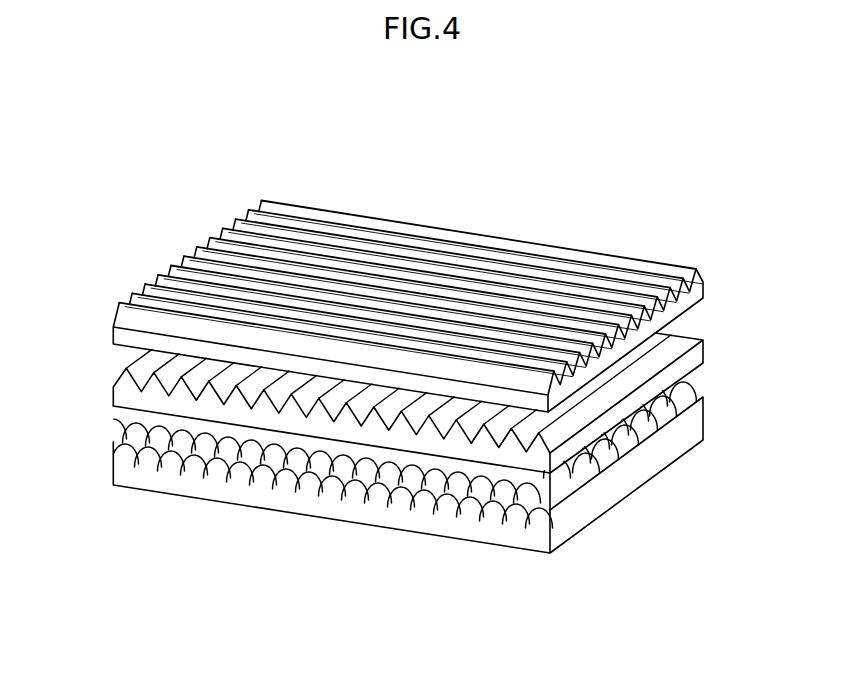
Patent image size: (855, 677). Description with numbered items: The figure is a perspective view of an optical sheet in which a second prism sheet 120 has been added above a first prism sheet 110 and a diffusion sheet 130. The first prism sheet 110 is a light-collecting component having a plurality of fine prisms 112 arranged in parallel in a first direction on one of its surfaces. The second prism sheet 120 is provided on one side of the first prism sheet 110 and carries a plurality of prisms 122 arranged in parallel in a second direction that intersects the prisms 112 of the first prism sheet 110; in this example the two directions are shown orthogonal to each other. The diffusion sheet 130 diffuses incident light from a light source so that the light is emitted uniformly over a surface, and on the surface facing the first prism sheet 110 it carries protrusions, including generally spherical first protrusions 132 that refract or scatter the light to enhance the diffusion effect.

The first prism sheet 110 is at (704, 352).
The prisms 112 is at (522, 433).
The second prism sheet 120 is at (704, 292).
The prisms 122 is at (183, 258).
The diffusion sheet 130 is at (704, 431).
The first protrusions 132 is at (118, 467).